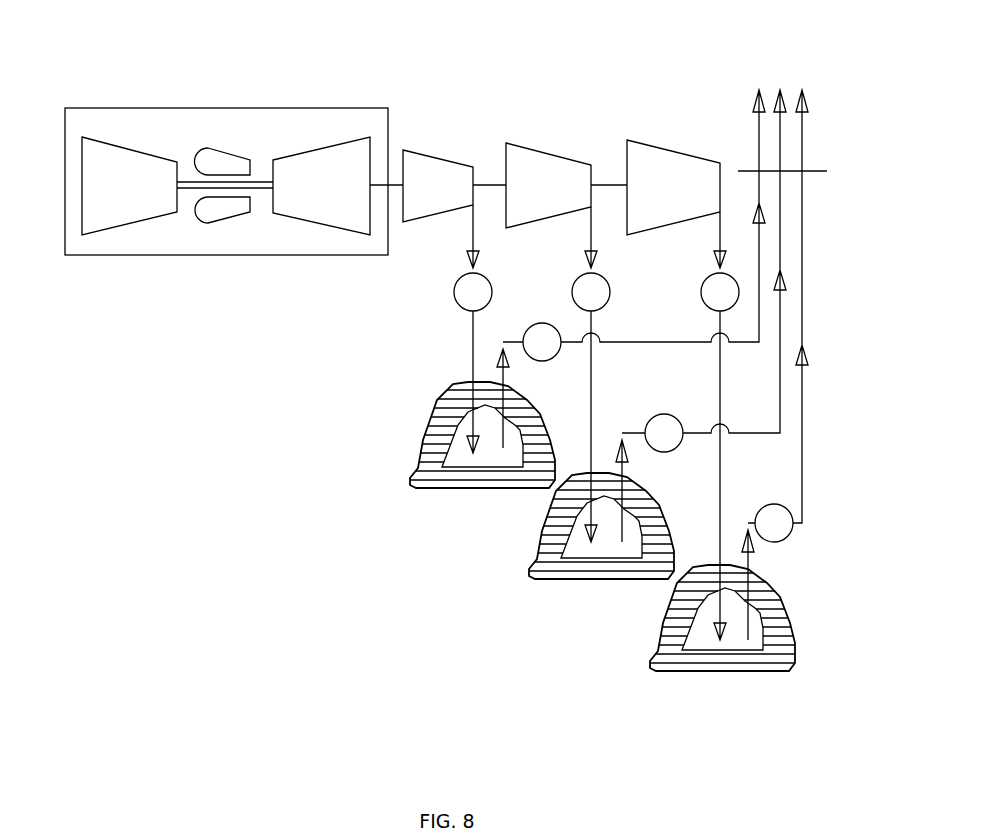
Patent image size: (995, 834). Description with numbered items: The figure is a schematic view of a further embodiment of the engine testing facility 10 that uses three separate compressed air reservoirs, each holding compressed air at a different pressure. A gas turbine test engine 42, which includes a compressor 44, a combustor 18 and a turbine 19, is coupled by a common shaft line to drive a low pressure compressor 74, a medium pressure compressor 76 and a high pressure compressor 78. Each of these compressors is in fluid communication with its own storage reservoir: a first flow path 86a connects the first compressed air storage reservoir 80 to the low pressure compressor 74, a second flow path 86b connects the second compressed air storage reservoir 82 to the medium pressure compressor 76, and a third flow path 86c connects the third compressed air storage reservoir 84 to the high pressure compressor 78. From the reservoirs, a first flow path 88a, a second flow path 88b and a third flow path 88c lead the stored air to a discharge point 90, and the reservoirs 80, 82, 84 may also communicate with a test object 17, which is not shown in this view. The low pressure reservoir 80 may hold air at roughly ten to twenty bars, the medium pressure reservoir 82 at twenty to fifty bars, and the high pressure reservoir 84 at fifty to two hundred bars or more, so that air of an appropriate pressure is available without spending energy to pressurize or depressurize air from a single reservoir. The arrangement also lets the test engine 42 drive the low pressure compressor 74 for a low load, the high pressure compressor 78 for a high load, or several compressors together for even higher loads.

The testing facility 10 is at (52, 50).
The test object 17 is at (130, 255).
The test engine 42 is at (182, 247).
The compressor 44 is at (105, 158).
The combustor 18 is at (227, 207).
The turbine 19 is at (318, 163).
The low pressure compressor 74 is at (423, 168).
The medium pressure compressor 76 is at (533, 160).
The high pressure compressor 78 is at (658, 158).
The first compressed air storage reservoir 80 is at (453, 448).
The second compressed air storage reservoir 82 is at (568, 544).
The third compressed air storage reservoir 84 is at (693, 638).
The first flow path 86a is at (470, 332).
The second flow path 86b is at (590, 388).
The third flow path 86c is at (718, 483).
The first flow path 88a is at (628, 340).
The second flow path 88b is at (750, 433).
The third flow path 88c is at (802, 455).
The discharge point 90 is at (802, 171).